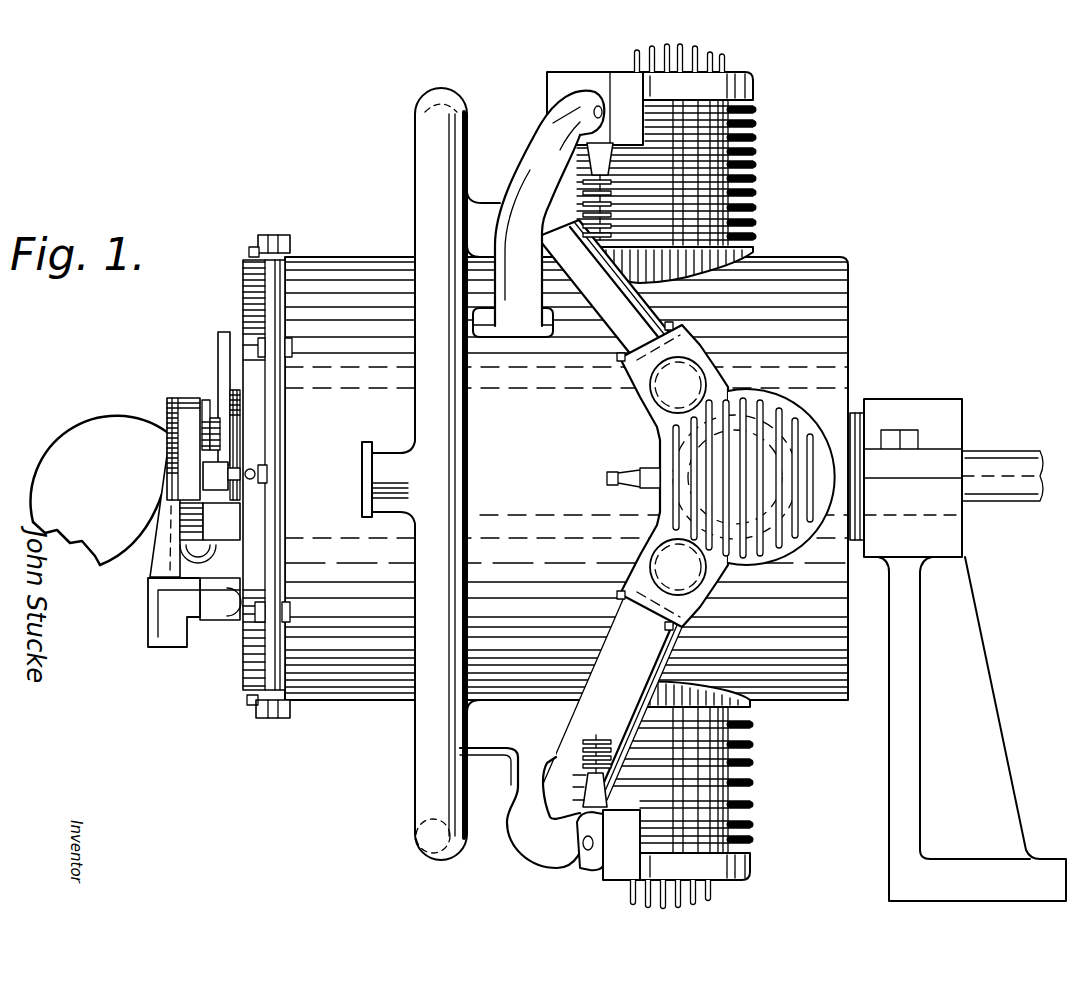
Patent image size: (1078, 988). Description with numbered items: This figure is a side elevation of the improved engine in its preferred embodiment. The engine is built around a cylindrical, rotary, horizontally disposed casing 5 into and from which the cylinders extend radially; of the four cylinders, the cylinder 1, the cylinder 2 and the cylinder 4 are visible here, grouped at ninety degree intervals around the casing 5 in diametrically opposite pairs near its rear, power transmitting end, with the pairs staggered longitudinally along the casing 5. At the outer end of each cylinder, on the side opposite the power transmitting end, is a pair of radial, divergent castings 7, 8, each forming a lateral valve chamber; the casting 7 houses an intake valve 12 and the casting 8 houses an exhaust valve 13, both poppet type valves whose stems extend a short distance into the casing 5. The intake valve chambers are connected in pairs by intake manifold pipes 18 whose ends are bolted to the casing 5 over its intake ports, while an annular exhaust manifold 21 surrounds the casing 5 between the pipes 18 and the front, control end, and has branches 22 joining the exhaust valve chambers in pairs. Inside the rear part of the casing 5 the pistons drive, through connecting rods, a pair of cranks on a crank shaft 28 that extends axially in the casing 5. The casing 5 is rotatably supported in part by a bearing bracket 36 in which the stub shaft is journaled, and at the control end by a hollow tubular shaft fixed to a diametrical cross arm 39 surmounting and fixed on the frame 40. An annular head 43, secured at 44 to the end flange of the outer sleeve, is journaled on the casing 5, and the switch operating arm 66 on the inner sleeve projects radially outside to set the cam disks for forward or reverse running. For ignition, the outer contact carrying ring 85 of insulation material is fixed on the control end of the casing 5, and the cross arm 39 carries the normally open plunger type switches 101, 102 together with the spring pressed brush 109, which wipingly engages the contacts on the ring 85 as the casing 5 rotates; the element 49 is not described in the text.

The cylinder 1 is at (750, 165).
The cylinder 2 is at (789, 404).
The cylinder 4 is at (733, 790).
The casing 5 is at (836, 272).
The casting 7 is at (555, 83).
The casting 8 is at (640, 557).
The intake valve 12 is at (580, 241).
The exhaust valve 13 is at (590, 734).
The intake manifold pipe 18 is at (617, 303).
The annular exhaust manifold 21 is at (452, 466).
The branch 22 is at (507, 723).
The crank shaft 28 is at (992, 470).
The bearing bracket 36 is at (968, 633).
The cross arm 39 is at (188, 478).
The frame 40 is at (165, 647).
The annular head 43 is at (270, 233).
The securing means 44 is at (288, 238).
The quadrant sector 49 is at (65, 487).
The switch operating arm 66 is at (223, 345).
The outer contact carrying ring 85 is at (246, 273).
The switch 101 is at (215, 620).
The switch 102 is at (226, 522).
The brush 109 is at (240, 470).